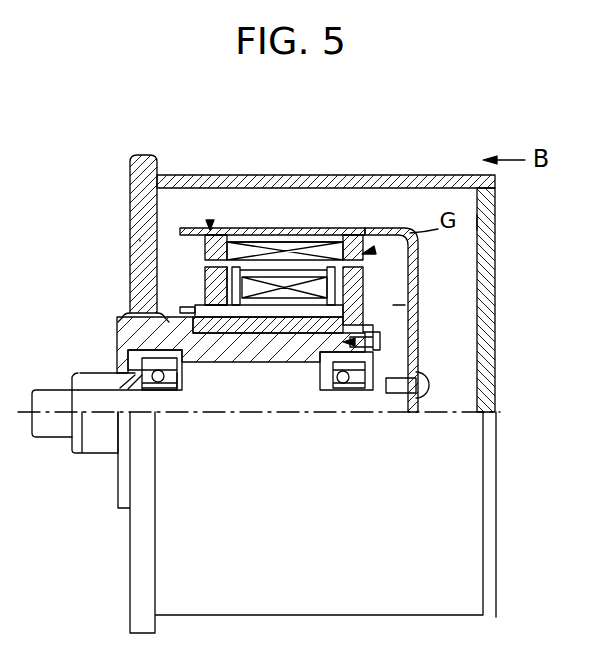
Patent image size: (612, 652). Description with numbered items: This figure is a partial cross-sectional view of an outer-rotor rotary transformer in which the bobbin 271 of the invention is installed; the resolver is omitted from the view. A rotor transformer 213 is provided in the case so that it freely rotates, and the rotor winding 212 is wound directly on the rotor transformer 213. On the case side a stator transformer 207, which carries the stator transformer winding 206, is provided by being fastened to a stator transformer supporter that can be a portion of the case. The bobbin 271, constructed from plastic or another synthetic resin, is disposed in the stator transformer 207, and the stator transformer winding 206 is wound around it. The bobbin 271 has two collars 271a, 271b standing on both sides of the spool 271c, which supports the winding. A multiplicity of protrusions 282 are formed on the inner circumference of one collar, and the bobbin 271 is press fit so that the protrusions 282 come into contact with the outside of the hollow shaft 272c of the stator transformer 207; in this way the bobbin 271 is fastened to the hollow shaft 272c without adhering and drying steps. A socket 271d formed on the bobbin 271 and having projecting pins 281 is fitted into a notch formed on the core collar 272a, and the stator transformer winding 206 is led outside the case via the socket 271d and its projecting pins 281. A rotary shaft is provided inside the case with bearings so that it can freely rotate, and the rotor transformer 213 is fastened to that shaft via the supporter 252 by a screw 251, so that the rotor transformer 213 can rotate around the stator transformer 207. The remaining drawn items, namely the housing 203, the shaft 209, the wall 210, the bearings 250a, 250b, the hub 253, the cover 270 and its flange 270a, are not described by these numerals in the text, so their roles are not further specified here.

The housing 203 is at (128, 157).
The stator transformer winding 206 is at (298, 272).
The stator transformer 207 is at (185, 262).
The shaft 209 is at (50, 425).
The side wall 210 is at (190, 247).
The rotor winding 212 is at (290, 228).
The rotor transformer 213 is at (385, 258).
The bearing 250a is at (150, 382).
The bearing 250b is at (352, 343).
The screw 251 is at (432, 384).
The supporter 252 is at (210, 221).
The hub 253 is at (196, 385).
The cover 270 is at (395, 306).
The cover flange 270a is at (496, 223).
The bobbin 271 is at (208, 298).
The collar 271a is at (350, 240).
The collar 271b is at (232, 238).
The spool 271c is at (320, 258).
The socket 271d is at (207, 305).
The core collar 272a is at (190, 257).
The hollow shaft 272c is at (306, 350).
The projecting pins 281 is at (182, 311).
The protrusions 282 is at (254, 336).